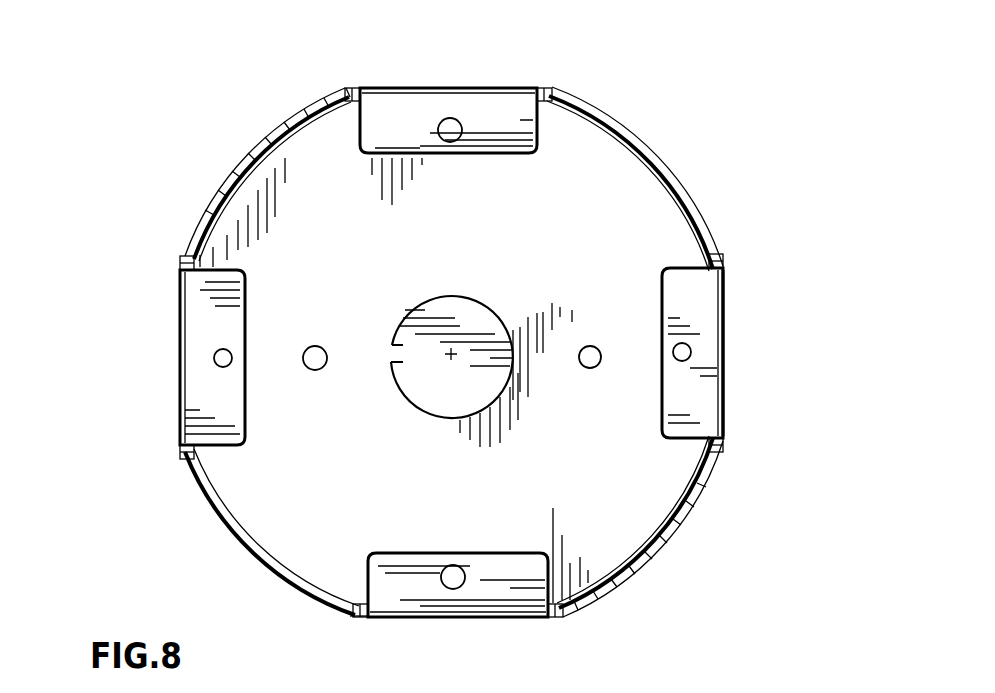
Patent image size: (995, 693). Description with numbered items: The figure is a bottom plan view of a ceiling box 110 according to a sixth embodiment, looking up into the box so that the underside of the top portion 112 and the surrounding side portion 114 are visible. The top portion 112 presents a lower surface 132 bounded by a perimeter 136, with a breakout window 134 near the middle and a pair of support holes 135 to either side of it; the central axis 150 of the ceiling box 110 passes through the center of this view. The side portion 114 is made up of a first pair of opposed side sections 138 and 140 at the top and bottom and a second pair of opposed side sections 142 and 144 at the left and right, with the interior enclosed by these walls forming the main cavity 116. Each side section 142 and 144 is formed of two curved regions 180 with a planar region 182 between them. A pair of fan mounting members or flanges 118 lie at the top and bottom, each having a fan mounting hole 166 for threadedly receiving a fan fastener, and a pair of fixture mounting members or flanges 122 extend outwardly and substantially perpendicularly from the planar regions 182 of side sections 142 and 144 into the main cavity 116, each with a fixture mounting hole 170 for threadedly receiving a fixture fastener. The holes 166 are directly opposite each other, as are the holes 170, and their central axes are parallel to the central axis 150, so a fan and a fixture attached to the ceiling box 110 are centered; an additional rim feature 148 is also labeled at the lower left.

The ceiling box 110 is at (155, 162).
The top portion 112 is at (665, 223).
The side portion 114 is at (246, 565).
The main cavity 116 is at (672, 480).
The fan mounting members or flanges 118 is at (396, 98).
The fixture mounting members or flanges 122 is at (203, 307).
The lower surface 132 is at (360, 471).
The breakout window 134 is at (423, 330).
The support holes 135 is at (312, 366).
The perimeter 136 is at (198, 222).
The side section 138 is at (498, 88).
The side section 140 is at (510, 618).
The side section 142 is at (178, 428).
The side section 144 is at (732, 412).
The rim end notch 148 is at (310, 597).
The central axis 150 is at (456, 350).
The fan mounting hole 166 is at (444, 135).
The fixture mounting hole 170 is at (220, 355).
The curved regions 180 is at (280, 128).
The planar region 182 is at (185, 370).